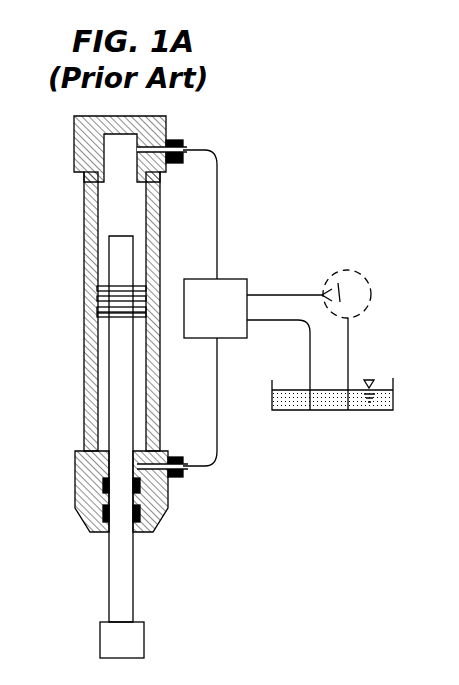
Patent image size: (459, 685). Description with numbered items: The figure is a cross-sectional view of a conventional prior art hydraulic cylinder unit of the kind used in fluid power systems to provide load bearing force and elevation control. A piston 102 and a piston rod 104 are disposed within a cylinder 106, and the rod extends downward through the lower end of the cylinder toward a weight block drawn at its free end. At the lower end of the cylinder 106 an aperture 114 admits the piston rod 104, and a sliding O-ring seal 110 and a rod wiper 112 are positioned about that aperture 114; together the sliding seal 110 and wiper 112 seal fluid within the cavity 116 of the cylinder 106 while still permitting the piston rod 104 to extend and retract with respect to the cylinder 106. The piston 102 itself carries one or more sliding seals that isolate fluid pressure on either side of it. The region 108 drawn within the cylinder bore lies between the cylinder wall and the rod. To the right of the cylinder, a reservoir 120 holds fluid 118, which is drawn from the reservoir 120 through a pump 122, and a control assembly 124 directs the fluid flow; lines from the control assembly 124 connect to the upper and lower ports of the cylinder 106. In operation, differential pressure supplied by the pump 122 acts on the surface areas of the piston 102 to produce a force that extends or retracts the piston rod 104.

The piston 102 is at (98, 287).
The piston rod 104 is at (113, 357).
The cylinder 106 is at (86, 219).
The cylinder bore 108 is at (102, 389).
The sliding O-ring seal 110 is at (103, 484).
The rod wiper 112 is at (103, 519).
The aperture 114 is at (108, 534).
The cavity 116 is at (102, 193).
The fluid 118 is at (394, 392).
The reservoir 120 is at (381, 410).
The pump 122 is at (363, 275).
The control assembly 124 is at (225, 288).